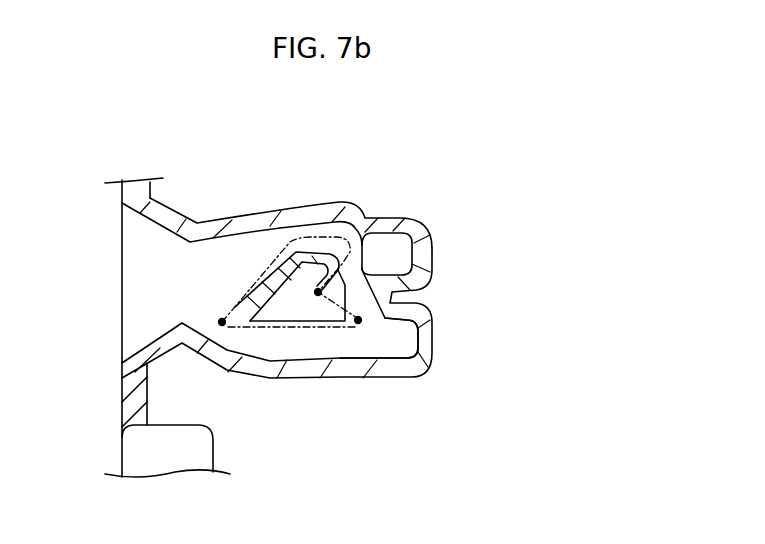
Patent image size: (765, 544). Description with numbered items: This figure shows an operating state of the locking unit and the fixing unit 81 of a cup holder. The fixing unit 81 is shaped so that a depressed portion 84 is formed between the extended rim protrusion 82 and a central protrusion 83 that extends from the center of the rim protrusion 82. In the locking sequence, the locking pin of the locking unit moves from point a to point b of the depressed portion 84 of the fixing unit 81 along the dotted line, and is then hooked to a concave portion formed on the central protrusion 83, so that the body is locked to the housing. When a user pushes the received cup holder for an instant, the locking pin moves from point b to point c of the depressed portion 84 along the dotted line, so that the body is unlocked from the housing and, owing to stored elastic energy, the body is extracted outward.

The fixing unit 81 is at (537, 230).
The rim protrusion 82 is at (422, 253).
The central protrusion 83 is at (300, 313).
The depressed portion 84 is at (402, 340).
The point a is at (222, 322).
The point b is at (318, 292).
The point c is at (358, 320).